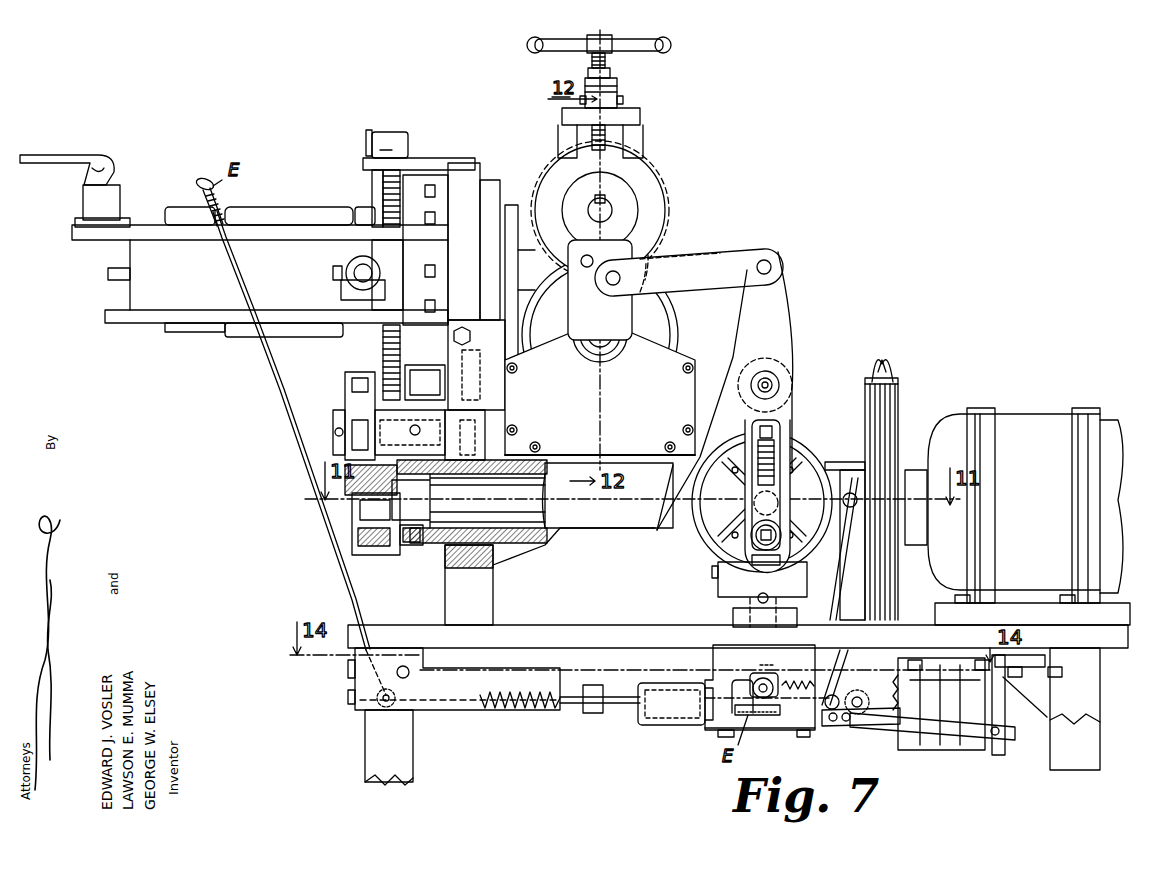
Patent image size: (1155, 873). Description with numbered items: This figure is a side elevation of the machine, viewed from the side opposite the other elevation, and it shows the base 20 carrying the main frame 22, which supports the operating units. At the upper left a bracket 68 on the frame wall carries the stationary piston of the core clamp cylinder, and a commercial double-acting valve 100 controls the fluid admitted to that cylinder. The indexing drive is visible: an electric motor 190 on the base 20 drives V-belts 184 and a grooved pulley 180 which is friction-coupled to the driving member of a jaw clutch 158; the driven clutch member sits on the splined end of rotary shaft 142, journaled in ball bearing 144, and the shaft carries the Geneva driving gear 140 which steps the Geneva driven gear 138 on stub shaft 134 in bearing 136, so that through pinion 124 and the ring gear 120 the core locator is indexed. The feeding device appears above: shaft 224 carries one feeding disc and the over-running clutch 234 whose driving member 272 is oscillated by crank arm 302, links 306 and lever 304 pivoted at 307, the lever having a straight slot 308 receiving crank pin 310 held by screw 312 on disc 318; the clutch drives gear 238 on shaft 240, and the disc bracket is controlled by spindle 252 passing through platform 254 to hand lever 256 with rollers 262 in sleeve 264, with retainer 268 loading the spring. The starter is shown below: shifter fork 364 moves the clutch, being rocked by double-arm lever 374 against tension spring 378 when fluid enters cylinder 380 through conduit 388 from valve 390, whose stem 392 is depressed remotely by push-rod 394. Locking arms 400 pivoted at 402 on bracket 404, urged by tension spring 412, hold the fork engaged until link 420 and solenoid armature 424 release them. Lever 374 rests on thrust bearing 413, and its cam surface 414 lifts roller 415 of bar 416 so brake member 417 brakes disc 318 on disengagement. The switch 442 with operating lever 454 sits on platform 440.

The base 20 is at (648, 630).
The main frame 22 is at (500, 585).
The bracket 68 is at (155, 305).
The double-acting valve 100 is at (78, 208).
The ring gear 120 is at (383, 360).
The pinion 124 is at (405, 383).
The stub shaft 134 is at (330, 430).
The bearing 136 is at (395, 446).
The Geneva driven gear 138 is at (352, 394).
The Geneva driving gear 140 is at (382, 555).
The rotary shaft 142 is at (540, 510).
The ball bearing 144 is at (412, 545).
The jaw clutch 158 is at (843, 478).
The pulley 180 is at (898, 392).
The V-belt 184 is at (882, 368).
The electric motor 190 is at (958, 417).
The shaft 224 is at (612, 345).
The over-running clutch 234 is at (722, 319).
The gear 238 is at (663, 187).
The shaft 240 is at (612, 206).
The spindle 252 is at (610, 135).
The platform 254 is at (640, 117).
The hand lever 256 is at (618, 80).
The rollers 262 is at (624, 99).
The sleeve 264 is at (612, 84).
The retainer 268 is at (590, 53).
The driving member 272 is at (678, 335).
The crank arm 302 is at (635, 318).
The lever 304 is at (786, 316).
The links 306 is at (728, 262).
The pivot 307 is at (780, 384).
The straight slot 308 is at (778, 455).
The crank pin 310 is at (752, 508).
The screw 312 is at (778, 528).
The disc 318 is at (752, 518).
The shifter fork 364 is at (844, 664).
The double-arm lever 374 is at (755, 712).
The tension spring 378 is at (540, 712).
The cylinder 380 is at (690, 727).
The conduit 388 is at (620, 708).
The valve 390 is at (397, 690).
The valve stem 392 is at (372, 680).
The push-rod 394 is at (290, 398).
The locking arms 400 is at (895, 728).
The pivot 402 is at (1000, 735).
The bracket 404 is at (1040, 680).
The tension spring 412 is at (900, 680).
The thrust bearing 413 is at (766, 715).
The cam surface 414 is at (773, 685).
The roller 415 is at (744, 670).
The bar 416 is at (752, 600).
The brake member 417 is at (722, 583).
The link 420 is at (862, 694).
The armature 424 is at (868, 724).
The platform 440 is at (430, 163).
The switch 442 is at (437, 132).
The operating lever 454 is at (366, 137).